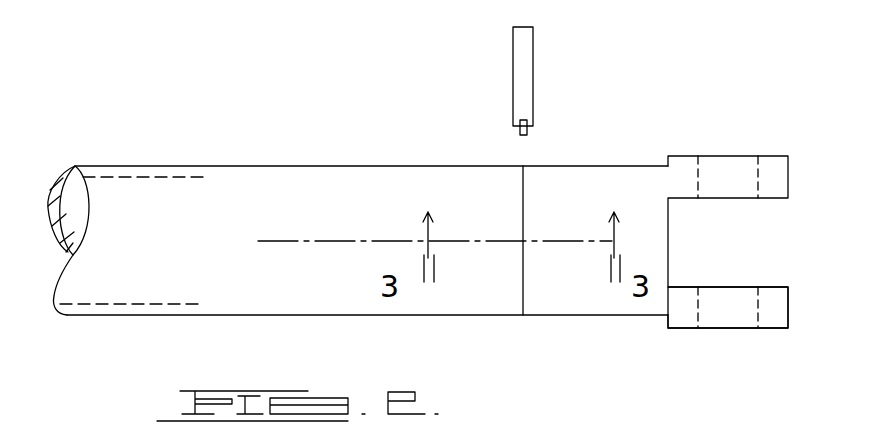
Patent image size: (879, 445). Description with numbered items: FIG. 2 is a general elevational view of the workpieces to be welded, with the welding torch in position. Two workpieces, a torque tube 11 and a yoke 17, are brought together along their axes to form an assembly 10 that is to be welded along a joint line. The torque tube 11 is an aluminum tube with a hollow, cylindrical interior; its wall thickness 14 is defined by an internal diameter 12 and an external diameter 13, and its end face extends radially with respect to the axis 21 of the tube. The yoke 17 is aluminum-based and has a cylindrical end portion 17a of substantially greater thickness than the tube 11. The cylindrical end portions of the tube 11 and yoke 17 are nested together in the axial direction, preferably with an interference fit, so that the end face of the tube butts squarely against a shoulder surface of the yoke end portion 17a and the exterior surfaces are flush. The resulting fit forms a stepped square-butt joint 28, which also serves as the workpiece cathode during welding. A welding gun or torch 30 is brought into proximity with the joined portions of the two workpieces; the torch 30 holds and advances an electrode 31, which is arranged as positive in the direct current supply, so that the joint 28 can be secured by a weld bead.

The assembly 10 is at (344, 127).
The torque tube 11 is at (416, 178).
The internal diameter 12 is at (165, 177).
The external diameter 13 is at (221, 166).
The wall thickness 14 is at (130, 187).
The yoke 17 is at (635, 172).
The cylindrical end portion 17a is at (563, 307).
The axis 21 is at (304, 241).
The stepped square-butt joint 28 is at (523, 292).
The welding torch 30 is at (528, 44).
The electrode 31 is at (527, 132).